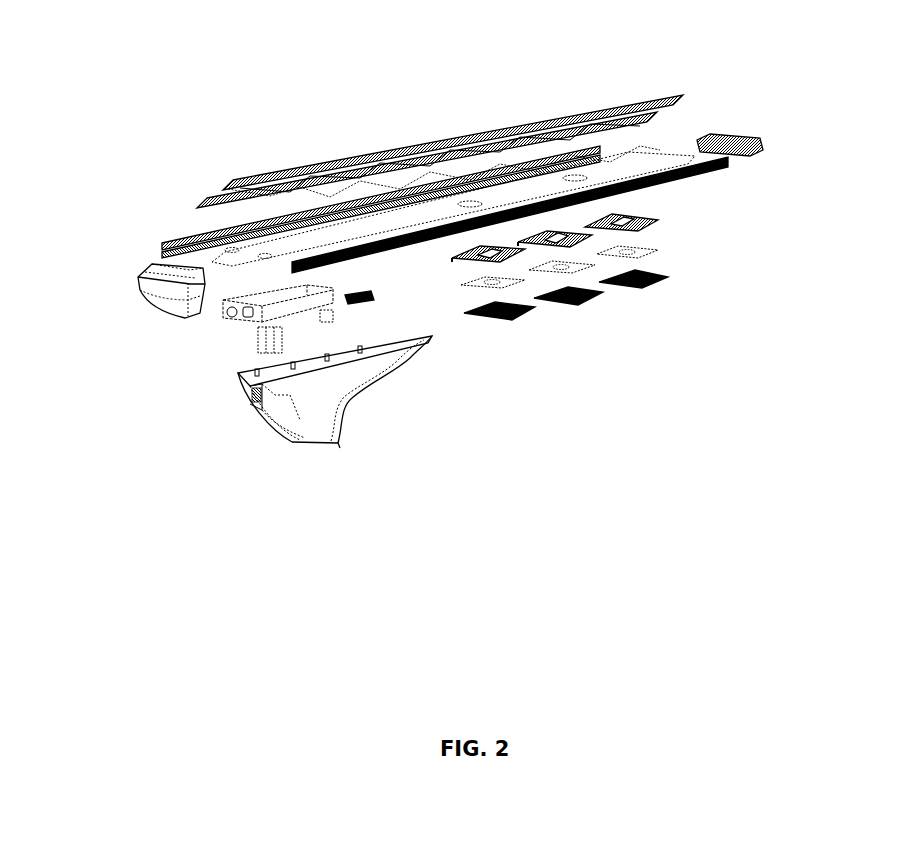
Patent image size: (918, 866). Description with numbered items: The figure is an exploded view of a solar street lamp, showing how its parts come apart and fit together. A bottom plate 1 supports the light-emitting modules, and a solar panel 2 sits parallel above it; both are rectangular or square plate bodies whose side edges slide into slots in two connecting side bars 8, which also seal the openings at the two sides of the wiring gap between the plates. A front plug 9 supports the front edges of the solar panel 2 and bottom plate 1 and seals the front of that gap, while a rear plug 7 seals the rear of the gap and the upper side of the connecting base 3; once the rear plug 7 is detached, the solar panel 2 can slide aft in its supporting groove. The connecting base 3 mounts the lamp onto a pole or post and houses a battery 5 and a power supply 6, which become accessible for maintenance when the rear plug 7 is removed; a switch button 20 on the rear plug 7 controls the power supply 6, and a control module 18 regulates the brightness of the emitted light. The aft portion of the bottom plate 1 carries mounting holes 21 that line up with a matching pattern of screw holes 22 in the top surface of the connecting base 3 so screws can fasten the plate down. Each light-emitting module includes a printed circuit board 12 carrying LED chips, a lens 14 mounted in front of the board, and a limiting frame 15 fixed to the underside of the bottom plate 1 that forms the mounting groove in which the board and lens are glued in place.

The bottom plate 1 is at (614, 171).
The solar panel 2 is at (400, 132).
The connecting base 3 is at (318, 413).
The battery 5 is at (248, 278).
The power supply 6 is at (260, 347).
The rear plug 7 is at (153, 303).
The connecting side bar 8 is at (670, 183).
The front plug 9 is at (757, 153).
The printed circuit board 12 is at (652, 255).
The lens 14 is at (575, 302).
The limiting frame 15 is at (495, 258).
The control module 18 is at (375, 307).
The switch button 20 is at (180, 282).
The mounting holes 21 is at (270, 260).
The screw holes 22 is at (392, 345).